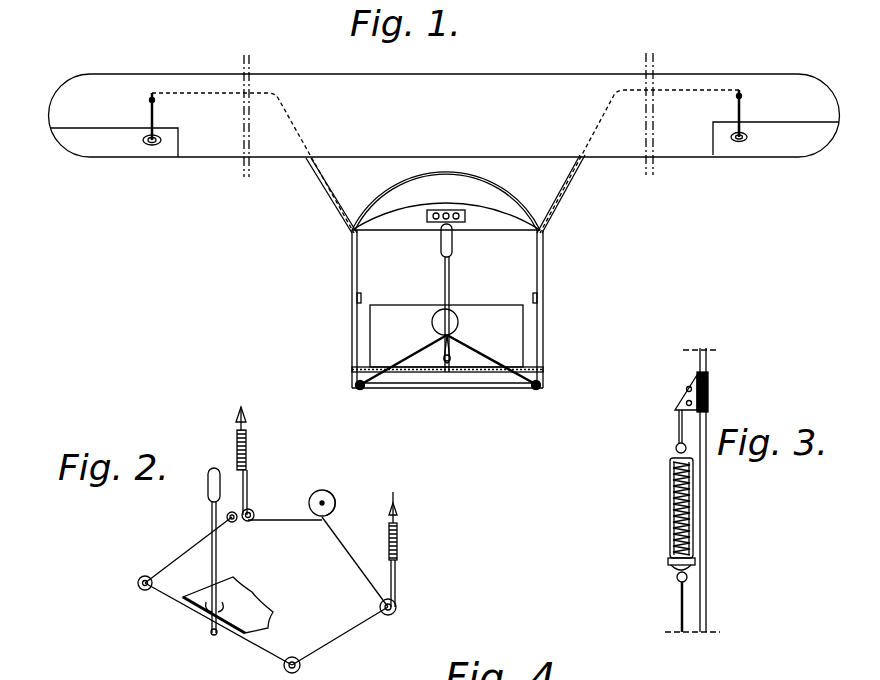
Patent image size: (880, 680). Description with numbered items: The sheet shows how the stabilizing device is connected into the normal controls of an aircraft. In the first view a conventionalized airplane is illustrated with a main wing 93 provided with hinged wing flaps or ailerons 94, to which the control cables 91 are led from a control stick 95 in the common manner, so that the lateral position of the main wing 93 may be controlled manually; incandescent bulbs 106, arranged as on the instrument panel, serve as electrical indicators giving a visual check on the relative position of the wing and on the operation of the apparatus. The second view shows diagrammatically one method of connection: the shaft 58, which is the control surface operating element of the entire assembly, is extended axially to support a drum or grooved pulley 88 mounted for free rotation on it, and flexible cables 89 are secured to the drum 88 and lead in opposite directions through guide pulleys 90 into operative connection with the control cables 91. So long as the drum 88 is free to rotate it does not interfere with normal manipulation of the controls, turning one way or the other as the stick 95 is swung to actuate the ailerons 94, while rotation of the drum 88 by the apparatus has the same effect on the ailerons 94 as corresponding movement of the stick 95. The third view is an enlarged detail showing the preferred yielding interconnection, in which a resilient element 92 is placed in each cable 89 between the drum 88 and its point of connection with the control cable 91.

In FIG. 1, the main wing 93 is at (444, 115).
In FIG. 1, the wing flaps or ailerons 94 is at (444, 139).
In FIG. 1, the control cables 91 is at (155, 104).
In FIG. 2, the control cables 91 is at (161, 571).
In FIG. 3, the control cables 91 is at (707, 522).
In FIG. 1, the control stick 95 is at (452, 283).
In FIG. 2, the control stick 95 is at (218, 548).
In FIG. 1, the incandescent bulbs 106 is at (463, 194).
In FIG. 1, the drum or grooved pulley 88 is at (460, 323).
In FIG. 2, the drum or grooved pulley 88 is at (311, 494).
In FIG. 1, the flexible cables 89 is at (420, 352).
In FIG. 2, the flexible cables 89 is at (247, 490).
In FIG. 3, the flexible cables 89 is at (680, 612).
In FIG. 1, the guide pulleys 90 is at (360, 392).
In FIG. 2, the guide pulleys 90 is at (255, 512).
In FIG. 2, the resilient element 92 is at (247, 455).
In FIG. 3, the resilient element 92 is at (670, 503).
In FIG. 2, the shaft 58 is at (336, 505).